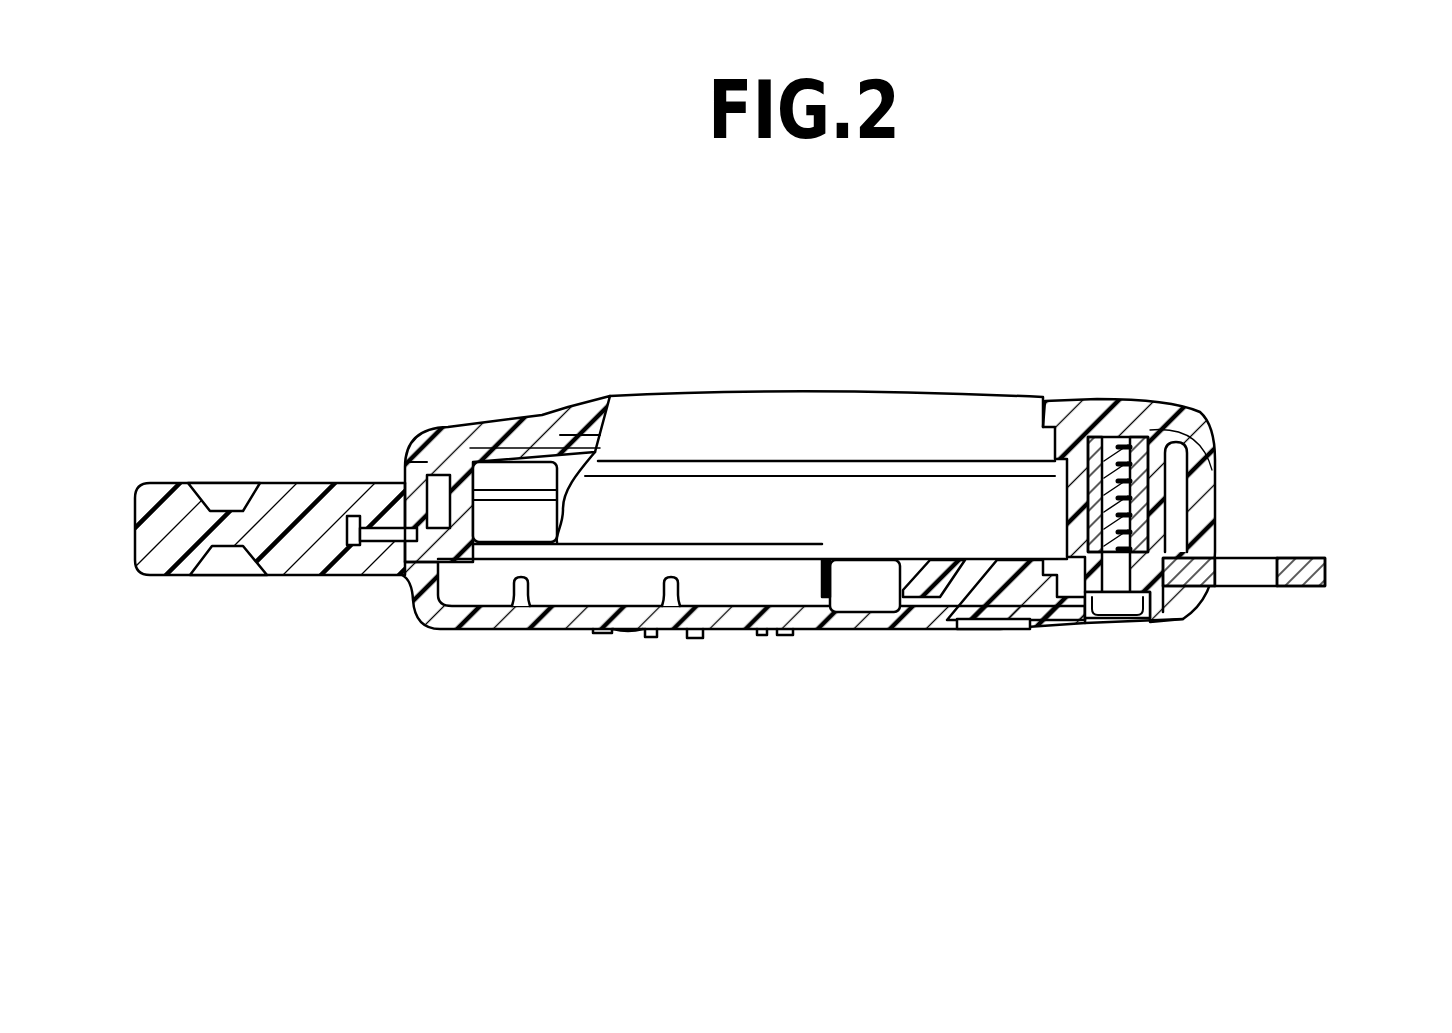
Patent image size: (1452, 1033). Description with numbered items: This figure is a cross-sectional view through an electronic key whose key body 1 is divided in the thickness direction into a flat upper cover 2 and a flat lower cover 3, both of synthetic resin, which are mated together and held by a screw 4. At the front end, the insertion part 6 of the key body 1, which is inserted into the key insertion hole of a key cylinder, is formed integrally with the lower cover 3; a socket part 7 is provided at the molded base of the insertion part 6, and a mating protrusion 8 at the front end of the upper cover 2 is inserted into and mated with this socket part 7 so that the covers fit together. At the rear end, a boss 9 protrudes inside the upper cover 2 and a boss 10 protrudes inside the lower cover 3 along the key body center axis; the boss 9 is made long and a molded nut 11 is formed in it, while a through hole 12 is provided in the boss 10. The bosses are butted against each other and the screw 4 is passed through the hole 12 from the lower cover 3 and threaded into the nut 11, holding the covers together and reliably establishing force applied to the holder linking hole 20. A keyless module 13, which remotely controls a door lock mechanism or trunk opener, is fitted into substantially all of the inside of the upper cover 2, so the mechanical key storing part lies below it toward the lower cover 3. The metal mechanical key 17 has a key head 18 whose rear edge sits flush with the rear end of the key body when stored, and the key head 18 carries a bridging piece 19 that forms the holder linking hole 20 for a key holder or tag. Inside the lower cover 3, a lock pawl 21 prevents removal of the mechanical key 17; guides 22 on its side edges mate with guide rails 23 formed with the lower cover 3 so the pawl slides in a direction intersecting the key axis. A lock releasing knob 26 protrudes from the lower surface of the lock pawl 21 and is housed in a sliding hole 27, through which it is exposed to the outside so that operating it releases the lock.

The key body 1 is at (456, 424).
The upper cover 2 is at (412, 427).
The lower cover 3 is at (530, 630).
The screw 4 is at (1097, 602).
The insertion part 6 is at (165, 483).
The socket part 7 is at (362, 545).
The mating protrusion 8 is at (385, 548).
The boss 9 is at (1186, 448).
The boss 10 is at (1186, 600).
The molded nut 11 is at (1160, 493).
The through hole 12 is at (1115, 596).
The keyless module 13 is at (818, 388).
The mechanical key 17 is at (1333, 548).
The key head 18 is at (1218, 578).
The bridging piece 19 is at (1325, 574).
The holder linking hole 20 is at (1272, 576).
The lock pawl 21 is at (958, 576).
The guides 22 is at (922, 566).
The guide rails 23 is at (870, 563).
The lock releasing knob 26 is at (1002, 629).
The sliding hole 27 is at (945, 627).